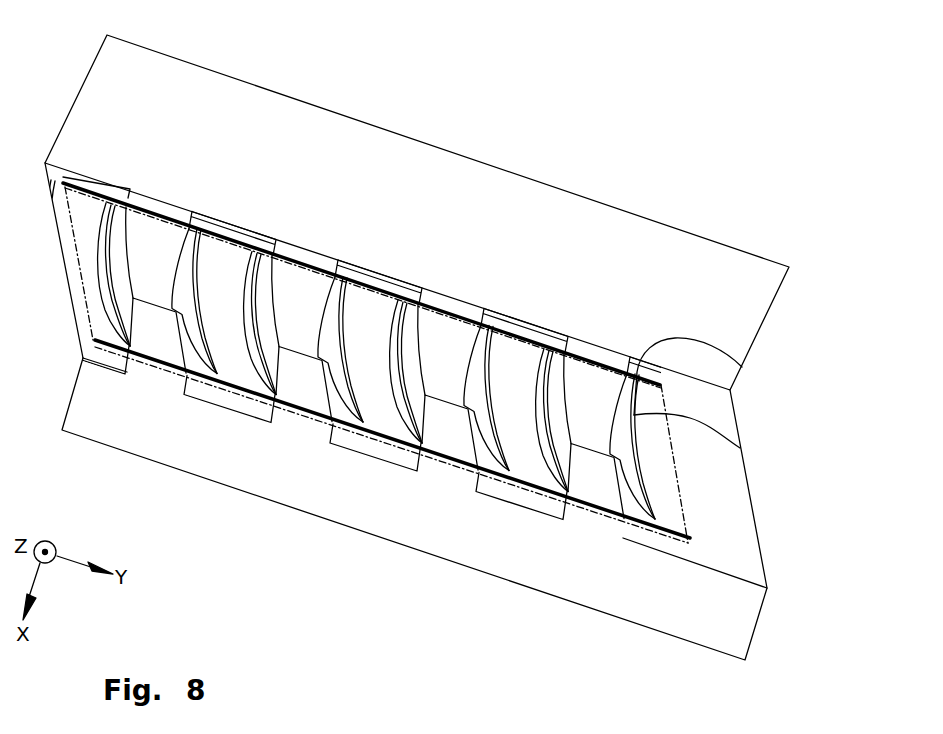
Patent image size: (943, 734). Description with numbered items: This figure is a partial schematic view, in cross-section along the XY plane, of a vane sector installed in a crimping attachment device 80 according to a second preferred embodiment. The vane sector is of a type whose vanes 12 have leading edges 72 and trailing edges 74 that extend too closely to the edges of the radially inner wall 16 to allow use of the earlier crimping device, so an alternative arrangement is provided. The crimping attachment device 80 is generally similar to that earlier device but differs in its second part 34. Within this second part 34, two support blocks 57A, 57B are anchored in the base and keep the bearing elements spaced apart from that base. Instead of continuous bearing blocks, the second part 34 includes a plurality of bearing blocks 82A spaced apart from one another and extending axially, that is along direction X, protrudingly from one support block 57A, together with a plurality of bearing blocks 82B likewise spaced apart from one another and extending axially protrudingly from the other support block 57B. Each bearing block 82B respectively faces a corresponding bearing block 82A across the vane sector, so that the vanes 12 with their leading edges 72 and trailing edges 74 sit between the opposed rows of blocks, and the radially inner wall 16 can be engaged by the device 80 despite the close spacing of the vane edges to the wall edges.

The vanes 12 is at (740, 448).
The radially inner wall 16 is at (590, 354).
The second part 34 is at (452, 354).
The support block 57A is at (723, 279).
The support block 57B is at (695, 603).
The leading edges 72 is at (648, 512).
The trailing edges 74 is at (742, 367).
The crimping attachment device 80 is at (419, 334).
The bearing blocks 82A is at (290, 293).
The bearing blocks 82B is at (595, 480).